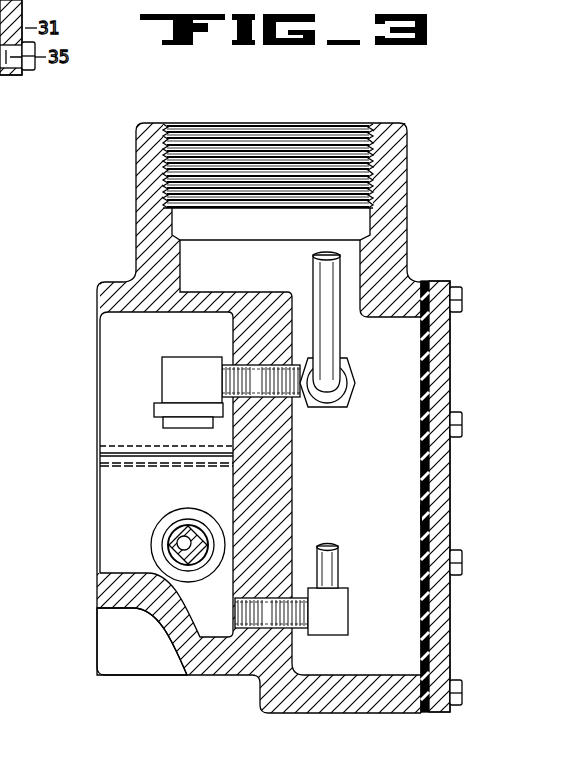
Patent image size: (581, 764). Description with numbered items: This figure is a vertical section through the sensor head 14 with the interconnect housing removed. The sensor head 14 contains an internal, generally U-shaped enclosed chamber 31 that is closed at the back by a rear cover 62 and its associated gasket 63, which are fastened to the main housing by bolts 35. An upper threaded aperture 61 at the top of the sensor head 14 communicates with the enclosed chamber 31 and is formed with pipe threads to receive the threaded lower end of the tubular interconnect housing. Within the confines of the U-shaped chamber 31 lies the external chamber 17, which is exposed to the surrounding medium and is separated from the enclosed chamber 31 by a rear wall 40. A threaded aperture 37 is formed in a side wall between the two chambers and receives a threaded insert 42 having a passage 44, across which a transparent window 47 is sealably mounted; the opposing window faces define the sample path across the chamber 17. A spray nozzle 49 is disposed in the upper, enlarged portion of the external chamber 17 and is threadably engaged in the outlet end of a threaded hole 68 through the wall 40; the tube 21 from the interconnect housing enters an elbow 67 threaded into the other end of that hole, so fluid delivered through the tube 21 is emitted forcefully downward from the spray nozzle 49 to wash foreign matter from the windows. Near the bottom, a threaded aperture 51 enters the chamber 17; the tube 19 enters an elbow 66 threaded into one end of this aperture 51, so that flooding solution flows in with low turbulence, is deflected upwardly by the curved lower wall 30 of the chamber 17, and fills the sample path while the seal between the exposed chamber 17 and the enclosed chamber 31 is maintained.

The sensor head 14 is at (88, 292).
The external chamber 17 is at (112, 322).
The tube 19 is at (334, 560).
The tube 21 is at (334, 337).
The curved lower wall 30 is at (160, 630).
The U-shaped chamber 31 is at (406, 481).
The bolts 35 is at (455, 315).
The threaded aperture 37 is at (162, 519).
The rear wall 40 is at (282, 477).
The threaded insert 42 is at (188, 508).
The passage 44 is at (180, 539).
The transparent window 47 is at (172, 553).
The spray nozzle 49 is at (200, 389).
The threaded aperture 51 is at (240, 614).
The upper threaded aperture 61 is at (215, 132).
The rear cover 62 is at (450, 495).
The gasket 63 is at (427, 516).
The elbow 66 is at (341, 612).
The elbow 67 is at (349, 388).
The threaded hole 68 is at (253, 367).